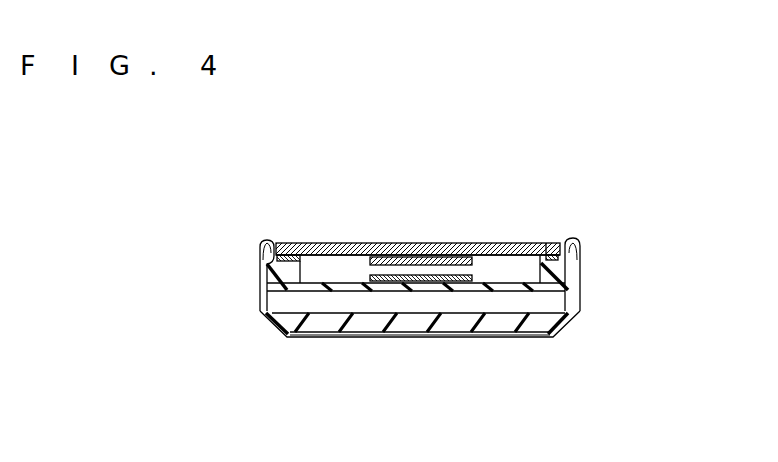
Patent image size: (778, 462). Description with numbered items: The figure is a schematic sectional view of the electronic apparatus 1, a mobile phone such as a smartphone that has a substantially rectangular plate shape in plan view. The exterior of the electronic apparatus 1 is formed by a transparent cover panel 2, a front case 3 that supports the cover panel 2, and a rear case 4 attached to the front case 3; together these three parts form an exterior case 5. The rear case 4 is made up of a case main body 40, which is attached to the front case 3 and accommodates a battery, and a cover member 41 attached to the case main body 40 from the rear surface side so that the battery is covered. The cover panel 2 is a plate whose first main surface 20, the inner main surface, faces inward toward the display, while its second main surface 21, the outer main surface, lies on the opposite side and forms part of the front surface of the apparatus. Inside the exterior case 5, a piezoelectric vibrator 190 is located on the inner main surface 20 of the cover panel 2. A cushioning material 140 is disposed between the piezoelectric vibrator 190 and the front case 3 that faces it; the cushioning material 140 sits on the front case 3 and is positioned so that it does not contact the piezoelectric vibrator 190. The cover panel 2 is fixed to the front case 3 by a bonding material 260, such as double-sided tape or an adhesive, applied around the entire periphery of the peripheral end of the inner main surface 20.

The electronic apparatus 1 is at (512, 178).
The cover panel 2 is at (333, 243).
The front case 3 is at (497, 287).
The rear case 4 is at (455, 398).
The exterior case 5 is at (579, 327).
The first main surface 20 is at (338, 258).
The second main surface 21 is at (372, 243).
The case main body 40 is at (447, 318).
The cover member 41 is at (399, 338).
The cushioning material 140 is at (462, 276).
The piezoelectric vibrator 190 is at (413, 258).
The bonding material 260 is at (292, 243).